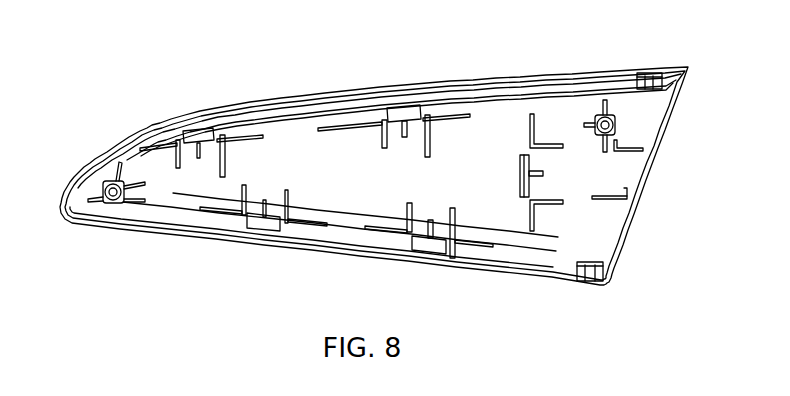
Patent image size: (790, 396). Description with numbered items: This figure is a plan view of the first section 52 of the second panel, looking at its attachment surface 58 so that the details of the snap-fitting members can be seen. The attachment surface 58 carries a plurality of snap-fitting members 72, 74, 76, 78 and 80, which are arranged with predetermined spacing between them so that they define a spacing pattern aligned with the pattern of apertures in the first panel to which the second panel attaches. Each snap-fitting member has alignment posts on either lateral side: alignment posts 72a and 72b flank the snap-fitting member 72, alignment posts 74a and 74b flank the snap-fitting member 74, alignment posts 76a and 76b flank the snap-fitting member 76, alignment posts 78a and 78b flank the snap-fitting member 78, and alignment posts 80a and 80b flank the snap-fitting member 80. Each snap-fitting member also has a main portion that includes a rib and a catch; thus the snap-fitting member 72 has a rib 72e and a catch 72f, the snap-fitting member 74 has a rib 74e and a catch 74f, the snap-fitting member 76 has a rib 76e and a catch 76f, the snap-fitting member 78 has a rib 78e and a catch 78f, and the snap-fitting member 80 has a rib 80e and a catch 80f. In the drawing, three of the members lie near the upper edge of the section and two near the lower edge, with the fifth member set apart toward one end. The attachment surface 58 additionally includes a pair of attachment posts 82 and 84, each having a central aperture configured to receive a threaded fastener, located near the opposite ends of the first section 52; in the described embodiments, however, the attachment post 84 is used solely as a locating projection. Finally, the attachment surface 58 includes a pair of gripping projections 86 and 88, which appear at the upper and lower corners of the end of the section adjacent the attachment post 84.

The first section 52 is at (268, 48).
The attachment surface 58 is at (494, 130).
The snap-fitting member 72 is at (263, 225).
The alignment post 72a is at (236, 216).
The alignment post 72b is at (288, 225).
The rib 72e is at (266, 205).
The catch 72f is at (264, 232).
The snap-fitting member 74 is at (201, 126).
The alignment post 74a is at (170, 142).
The alignment post 74b is at (224, 136).
The rib 74e is at (200, 160).
The catch 74f is at (202, 134).
The snap-fitting member 76 is at (429, 247).
The alignment post 76a is at (397, 238).
The alignment post 76b is at (453, 252).
The rib 76e is at (430, 219).
The catch 76f is at (428, 256).
The snap-fitting member 78 is at (394, 103).
The alignment post 78a is at (380, 122).
The alignment post 78b is at (433, 117).
The rib 78e is at (406, 139).
The catch 78f is at (409, 110).
The snap-fitting member 80 is at (531, 169).
The alignment post 80a is at (538, 206).
The alignment post 80b is at (535, 143).
The rib 80e is at (543, 174).
The catch 80f is at (520, 167).
The attachment post 82 is at (105, 183).
The attachment post 84 is at (618, 120).
The gripping projection 86 is at (590, 281).
The gripping projection 88 is at (648, 74).